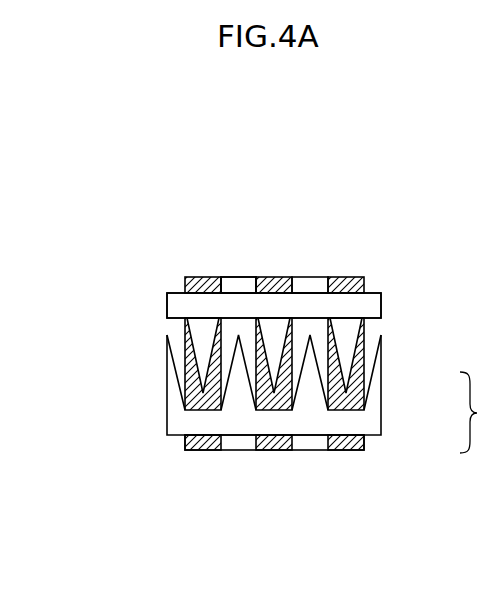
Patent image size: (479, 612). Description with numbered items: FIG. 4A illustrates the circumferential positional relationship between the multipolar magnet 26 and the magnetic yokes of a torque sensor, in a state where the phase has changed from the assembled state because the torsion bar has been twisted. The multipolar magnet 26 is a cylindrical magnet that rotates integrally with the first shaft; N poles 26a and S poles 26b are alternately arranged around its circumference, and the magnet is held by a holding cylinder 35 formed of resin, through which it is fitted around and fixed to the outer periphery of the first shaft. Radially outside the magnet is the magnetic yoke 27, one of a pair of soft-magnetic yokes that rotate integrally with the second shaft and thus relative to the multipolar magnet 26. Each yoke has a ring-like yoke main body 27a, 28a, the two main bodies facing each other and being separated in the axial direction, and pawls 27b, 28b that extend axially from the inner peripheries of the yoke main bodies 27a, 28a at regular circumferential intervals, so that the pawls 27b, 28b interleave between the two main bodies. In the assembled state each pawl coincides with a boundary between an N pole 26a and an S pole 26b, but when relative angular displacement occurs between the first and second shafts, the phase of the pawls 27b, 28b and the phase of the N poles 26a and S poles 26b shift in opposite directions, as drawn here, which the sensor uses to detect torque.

The multipolar magnet 26 is at (310, 450).
The N poles 26a is at (190, 277).
The S poles 26b is at (237, 277).
The holding cylinder 35 is at (247, 277).
The magnetic yoke 27 is at (254, 342).
The yoke main body 27a is at (175, 304).
The pawls 27b is at (202, 336).
The yoke main body 28a is at (367, 422).
The pawls 28b is at (308, 397).